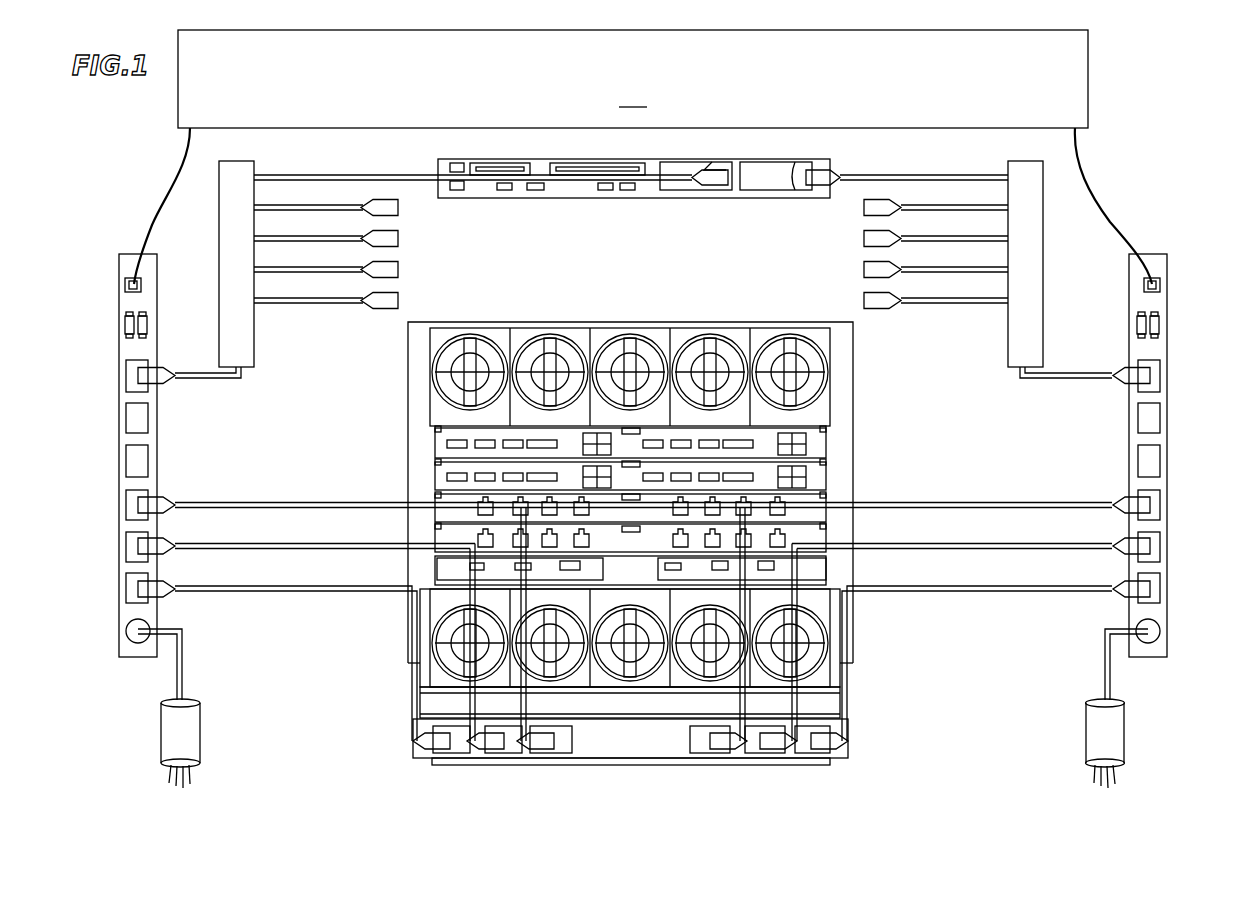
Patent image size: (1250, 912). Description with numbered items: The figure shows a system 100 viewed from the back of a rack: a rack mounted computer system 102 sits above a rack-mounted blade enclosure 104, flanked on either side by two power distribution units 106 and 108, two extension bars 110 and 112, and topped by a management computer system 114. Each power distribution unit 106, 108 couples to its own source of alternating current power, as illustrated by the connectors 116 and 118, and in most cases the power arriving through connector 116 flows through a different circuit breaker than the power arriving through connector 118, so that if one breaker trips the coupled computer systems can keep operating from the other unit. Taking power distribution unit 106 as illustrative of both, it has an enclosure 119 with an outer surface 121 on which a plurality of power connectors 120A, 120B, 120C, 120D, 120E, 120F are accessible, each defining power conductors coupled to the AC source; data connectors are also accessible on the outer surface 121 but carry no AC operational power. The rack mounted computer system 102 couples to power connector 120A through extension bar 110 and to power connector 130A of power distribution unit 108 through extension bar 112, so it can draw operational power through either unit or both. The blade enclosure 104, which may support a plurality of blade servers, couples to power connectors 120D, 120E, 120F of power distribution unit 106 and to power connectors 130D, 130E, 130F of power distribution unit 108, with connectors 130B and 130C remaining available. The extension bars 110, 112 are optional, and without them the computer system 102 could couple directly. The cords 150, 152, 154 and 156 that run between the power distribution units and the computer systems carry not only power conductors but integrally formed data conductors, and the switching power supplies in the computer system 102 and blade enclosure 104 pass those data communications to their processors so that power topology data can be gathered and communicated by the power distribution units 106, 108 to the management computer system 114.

The system 100 is at (1140, 82).
The rack mounted computer system 102 is at (655, 198).
The rack-mounted blade enclosure 104 is at (745, 765).
The power distribution unit 106 is at (157, 441).
The power distribution unit 108 is at (1129, 425).
The extension bar 110 is at (249, 161).
The extension bar 112 is at (1043, 264).
The management computer system 114 is at (633, 79).
The connector 116 is at (200, 727).
The connector 118 is at (1124, 727).
The enclosure 119 is at (157, 265).
The outer surface 121 is at (114, 242).
The power connector 120A is at (126, 378).
The power connector 120B is at (126, 428).
The power connector 120C is at (126, 455).
The power connector 120D is at (126, 503).
The power connector 120E is at (126, 538).
The power connector 120F is at (126, 592).
The power connector 130A is at (1162, 381).
The power connector 130B is at (1162, 410).
The power connector 130C is at (1162, 456).
The power connector 130D is at (1162, 500).
The power connector 130E is at (1162, 540).
The power connector 130F is at (1162, 592).
The cord 150 is at (292, 500).
The cord 152 is at (917, 500).
The cord 154 is at (312, 306).
The cord 156 is at (932, 306).